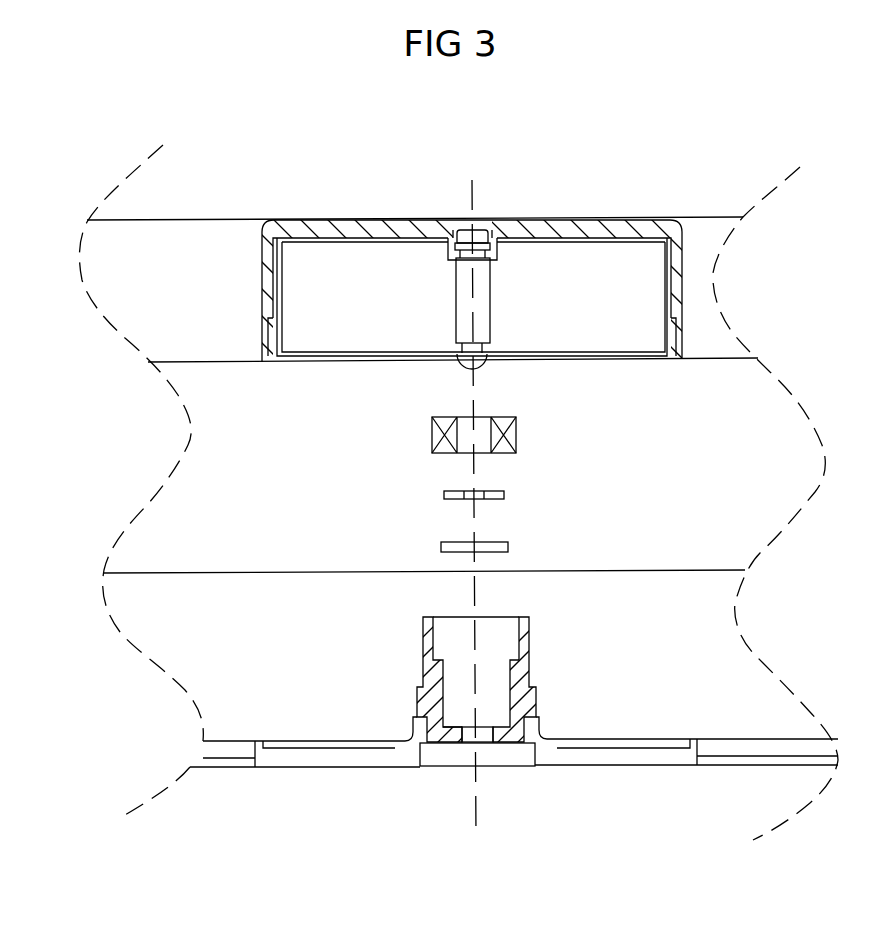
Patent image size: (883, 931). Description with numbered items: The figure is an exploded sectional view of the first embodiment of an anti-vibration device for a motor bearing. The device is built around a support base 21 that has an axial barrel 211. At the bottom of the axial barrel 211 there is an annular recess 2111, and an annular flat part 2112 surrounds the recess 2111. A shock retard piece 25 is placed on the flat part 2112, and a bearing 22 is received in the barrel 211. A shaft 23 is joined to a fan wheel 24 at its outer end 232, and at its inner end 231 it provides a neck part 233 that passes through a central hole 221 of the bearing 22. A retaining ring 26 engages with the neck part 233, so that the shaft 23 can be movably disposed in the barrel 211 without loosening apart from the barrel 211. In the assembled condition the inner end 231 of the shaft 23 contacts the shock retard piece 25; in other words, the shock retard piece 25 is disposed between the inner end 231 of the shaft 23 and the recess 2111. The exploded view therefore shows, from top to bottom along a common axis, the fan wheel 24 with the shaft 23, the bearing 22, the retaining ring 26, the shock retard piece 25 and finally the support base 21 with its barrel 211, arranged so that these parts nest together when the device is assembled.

The support base 21 is at (612, 758).
The axial barrel 211 is at (500, 678).
The annular recess 2111 is at (487, 741).
The annular flat part 2112 is at (458, 718).
The bearing 22 is at (486, 435).
The central hole 221 is at (463, 448).
The shaft 23 is at (508, 294).
The inner end 231 is at (467, 365).
The outer end 232 is at (496, 224).
The neck part 233 is at (495, 356).
The fan wheel 24 is at (380, 220).
The shock retard piece 25 is at (458, 543).
The retaining ring 26 is at (503, 495).